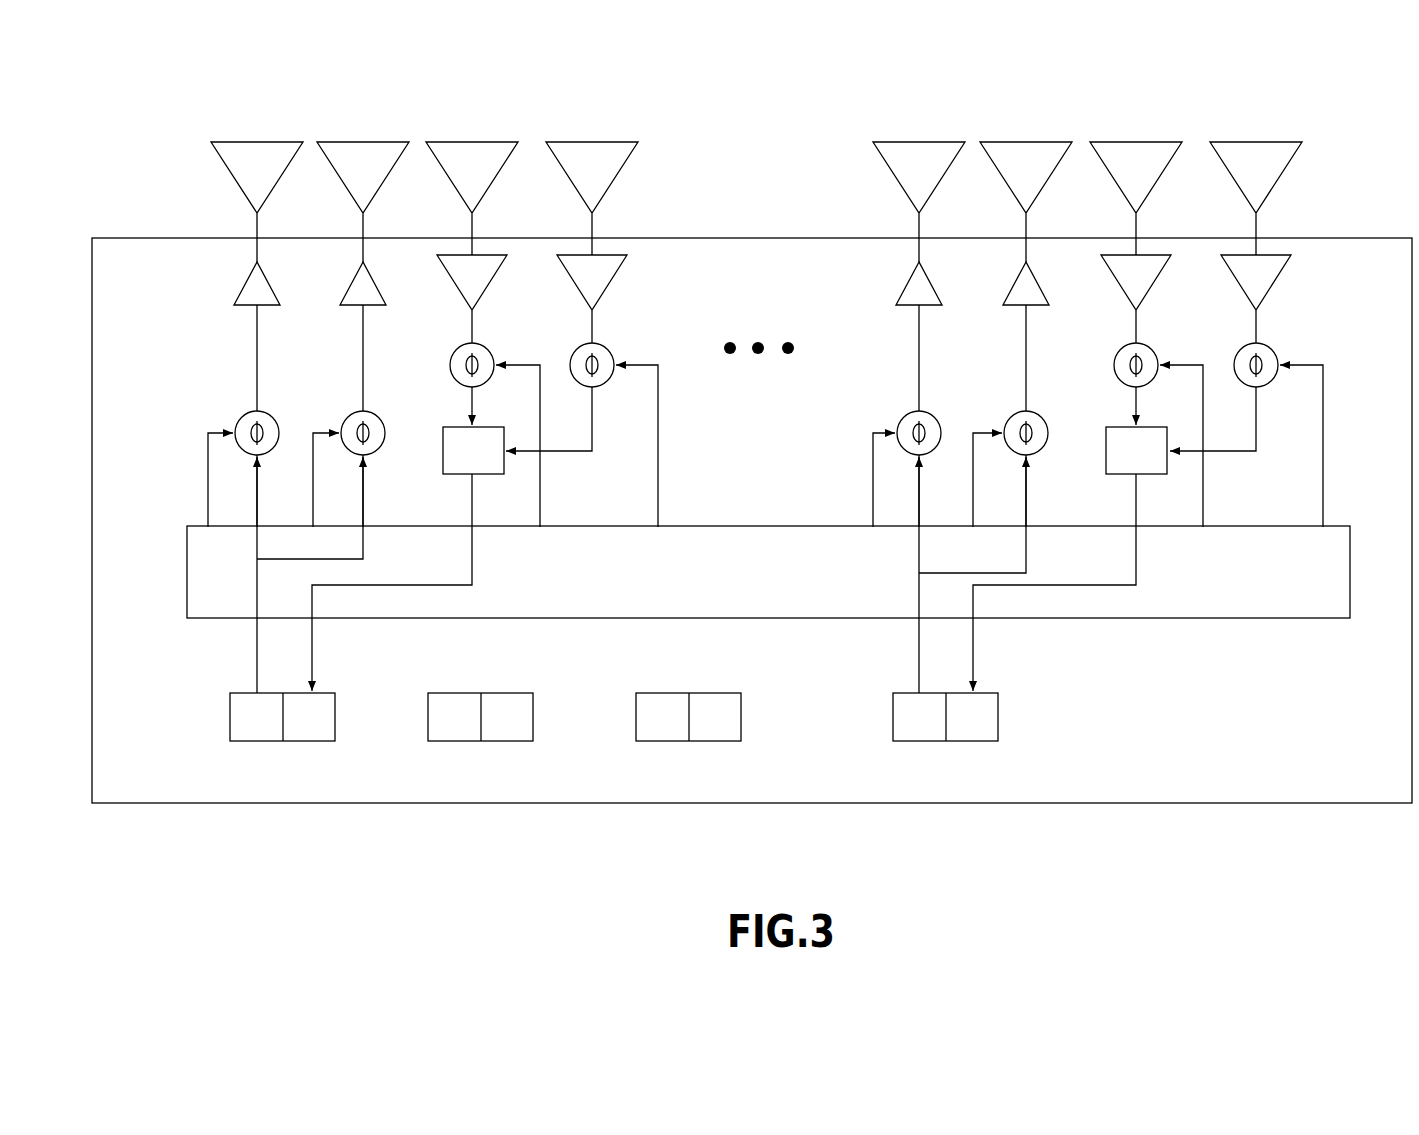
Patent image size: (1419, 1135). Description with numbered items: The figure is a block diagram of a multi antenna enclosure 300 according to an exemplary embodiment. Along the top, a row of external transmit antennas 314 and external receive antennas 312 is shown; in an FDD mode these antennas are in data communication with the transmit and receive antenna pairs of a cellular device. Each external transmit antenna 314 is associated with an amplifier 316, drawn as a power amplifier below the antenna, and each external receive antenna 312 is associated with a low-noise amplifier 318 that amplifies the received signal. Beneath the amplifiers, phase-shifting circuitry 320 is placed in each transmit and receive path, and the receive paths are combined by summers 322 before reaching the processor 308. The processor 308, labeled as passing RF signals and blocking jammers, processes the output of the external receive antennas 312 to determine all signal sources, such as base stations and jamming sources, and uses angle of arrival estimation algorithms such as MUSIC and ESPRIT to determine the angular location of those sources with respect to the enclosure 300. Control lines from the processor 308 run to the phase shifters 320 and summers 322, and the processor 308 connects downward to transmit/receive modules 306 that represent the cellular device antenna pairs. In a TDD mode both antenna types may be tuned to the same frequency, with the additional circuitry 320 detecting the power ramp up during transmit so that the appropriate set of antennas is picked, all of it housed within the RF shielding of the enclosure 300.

The multi antenna enclosure 300 is at (226, 76).
The TX/RX module 306 is at (288, 742).
The processor 308 is at (860, 620).
The external receive antenna 312 is at (438, 142).
The external transmit antenna 314 is at (232, 142).
The amplifier 316 is at (236, 303).
The low-noise amplifier 318 is at (597, 308).
The modulator/demodulator 320 is at (243, 417).
The summer 322 is at (462, 475).